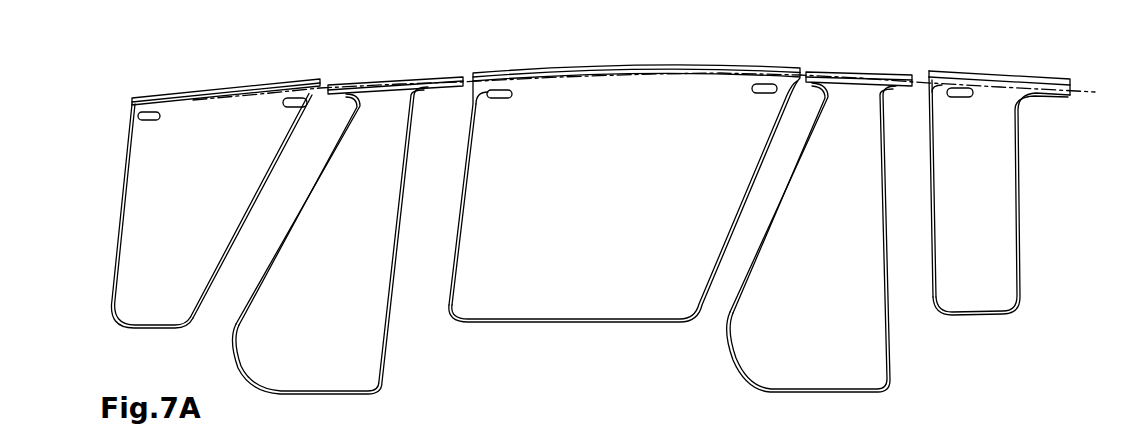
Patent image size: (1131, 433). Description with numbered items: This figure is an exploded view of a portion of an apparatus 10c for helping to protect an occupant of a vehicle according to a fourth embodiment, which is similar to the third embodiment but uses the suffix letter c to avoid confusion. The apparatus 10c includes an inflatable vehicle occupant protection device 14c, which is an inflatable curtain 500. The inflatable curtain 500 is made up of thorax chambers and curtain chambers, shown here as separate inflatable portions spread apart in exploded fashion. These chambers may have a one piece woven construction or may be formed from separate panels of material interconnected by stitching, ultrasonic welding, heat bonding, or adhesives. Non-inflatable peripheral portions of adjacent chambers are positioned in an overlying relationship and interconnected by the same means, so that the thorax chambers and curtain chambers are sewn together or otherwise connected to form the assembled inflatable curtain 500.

The inflatable curtain 500 is at (264, 56).
The apparatus 10c is at (172, 60).
The inflatable vehicle occupant protection device 14c is at (120, 80).